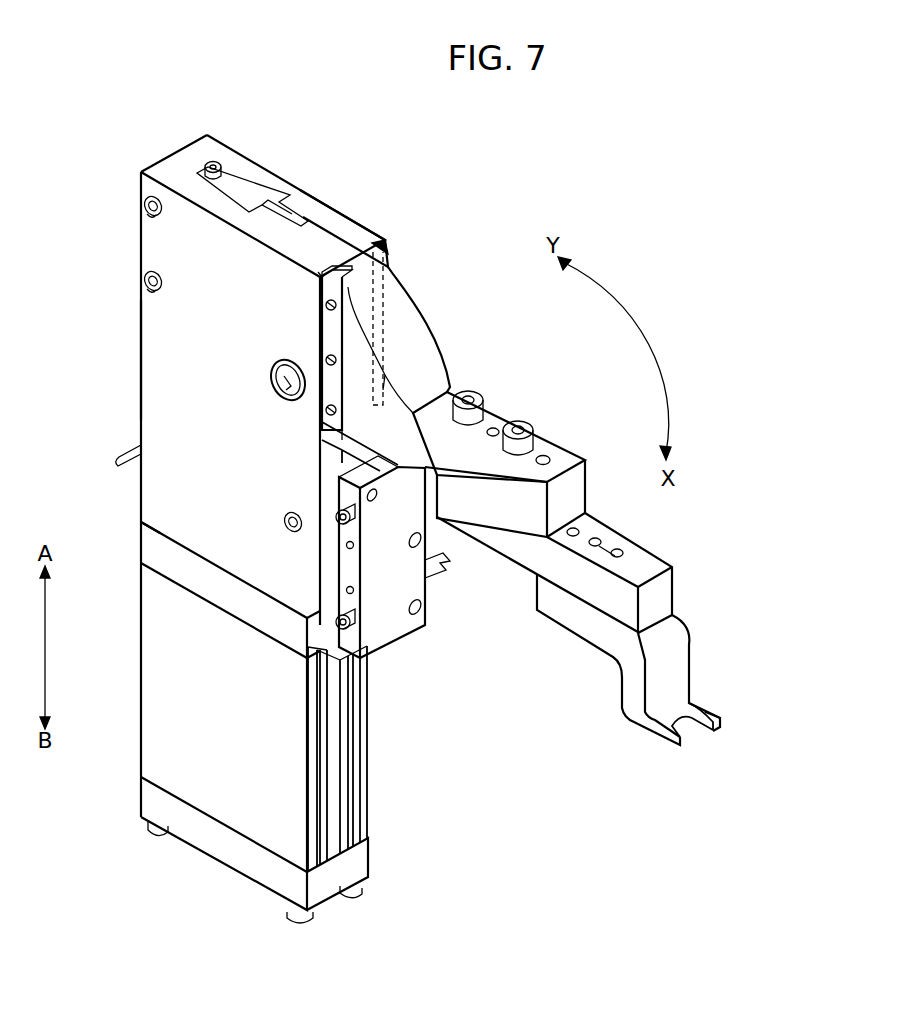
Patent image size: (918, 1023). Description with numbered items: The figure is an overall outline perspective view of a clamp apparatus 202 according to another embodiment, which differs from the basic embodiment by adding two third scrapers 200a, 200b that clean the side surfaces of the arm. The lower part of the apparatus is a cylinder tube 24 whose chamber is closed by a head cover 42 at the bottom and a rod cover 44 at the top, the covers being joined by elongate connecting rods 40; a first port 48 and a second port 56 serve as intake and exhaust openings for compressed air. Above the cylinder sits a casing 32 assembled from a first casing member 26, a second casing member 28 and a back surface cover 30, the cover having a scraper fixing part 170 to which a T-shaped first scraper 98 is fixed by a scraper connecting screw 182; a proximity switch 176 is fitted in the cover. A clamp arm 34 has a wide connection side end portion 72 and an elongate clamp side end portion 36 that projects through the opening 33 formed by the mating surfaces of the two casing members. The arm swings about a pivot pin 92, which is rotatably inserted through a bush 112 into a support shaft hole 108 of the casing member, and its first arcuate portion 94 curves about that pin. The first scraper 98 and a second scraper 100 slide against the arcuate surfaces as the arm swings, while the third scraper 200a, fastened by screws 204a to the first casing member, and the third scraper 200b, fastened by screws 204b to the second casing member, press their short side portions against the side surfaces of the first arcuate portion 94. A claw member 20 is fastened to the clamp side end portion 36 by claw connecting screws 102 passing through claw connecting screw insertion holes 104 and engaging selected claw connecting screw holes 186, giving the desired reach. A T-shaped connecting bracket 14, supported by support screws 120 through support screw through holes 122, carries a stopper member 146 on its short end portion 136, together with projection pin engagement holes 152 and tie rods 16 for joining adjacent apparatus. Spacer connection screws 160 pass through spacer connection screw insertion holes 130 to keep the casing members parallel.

The connecting bracket 14 is at (399, 615).
The tie rod 16 is at (336, 524).
The claw member 20 is at (660, 688).
The cylinder tube 24 is at (330, 757).
The first casing member 26 is at (160, 385).
The second casing member 28 is at (360, 230).
The back surface cover 30 is at (142, 172).
The casing 32 is at (150, 355).
The opening 33 is at (316, 266).
The clamp arm 34 is at (560, 432).
The clamp side end portion 36 is at (533, 521).
The connecting rod 40 is at (151, 833).
The head cover 42 is at (329, 886).
The rod cover 44 is at (196, 585).
The first port 48 is at (140, 797).
The second port 56 is at (140, 542).
The connection side end portion 72 is at (353, 338).
The pivot pin 92 is at (288, 402).
The first arcuate portion 94 is at (368, 232).
The first scraper 98 is at (267, 228).
The second scraper 100 is at (320, 466).
The claw connecting screw 102 is at (467, 412).
The claw connecting screw insertion hole 104 is at (495, 437).
The support shaft hole 108 is at (276, 392).
The bush 112 is at (272, 366).
The support screw 120 is at (284, 518).
The support screw through hole 122 is at (288, 530).
The spacer connection screw insertion hole 130 is at (152, 216).
The short end portion 136 is at (412, 586).
The stopper member 146 is at (358, 452).
The projection pin engagement hole 152 is at (345, 548).
The spacer connection screw 160 is at (145, 205).
The scraper fixing part 170 is at (199, 200).
The proximity switch 176 is at (133, 427).
The scraper connecting screw 182 is at (211, 162).
The claw connecting screw hole 186 is at (572, 538).
The third scraper 200a is at (321, 276).
The third scraper 200b is at (382, 248).
The clamp apparatus 202 is at (578, 181).
The screws 204a is at (348, 286).
The screws 204b is at (388, 332).